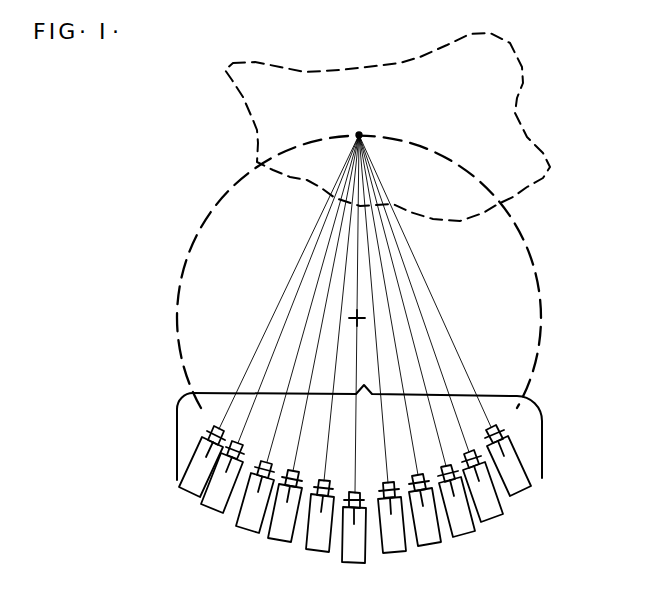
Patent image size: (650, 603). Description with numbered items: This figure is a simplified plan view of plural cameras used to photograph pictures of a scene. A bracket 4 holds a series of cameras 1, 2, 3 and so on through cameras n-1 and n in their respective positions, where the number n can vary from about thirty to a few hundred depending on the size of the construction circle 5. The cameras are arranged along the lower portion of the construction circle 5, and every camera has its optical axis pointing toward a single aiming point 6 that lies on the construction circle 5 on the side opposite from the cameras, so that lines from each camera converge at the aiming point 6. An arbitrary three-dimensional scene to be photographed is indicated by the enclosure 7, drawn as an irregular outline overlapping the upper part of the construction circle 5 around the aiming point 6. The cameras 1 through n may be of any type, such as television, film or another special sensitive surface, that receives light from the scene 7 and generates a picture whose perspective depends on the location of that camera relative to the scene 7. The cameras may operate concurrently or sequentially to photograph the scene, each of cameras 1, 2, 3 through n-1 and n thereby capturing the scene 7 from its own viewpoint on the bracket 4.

The camera 1 is at (183, 495).
The camera 2 is at (215, 514).
The camera 3 is at (244, 533).
The bracket 4 is at (373, 386).
The construction circle 5 is at (535, 268).
The aiming point 6 is at (362, 133).
The enclosure 7 is at (522, 95).
The camera n-1 is at (495, 523).
The camera n is at (530, 493).